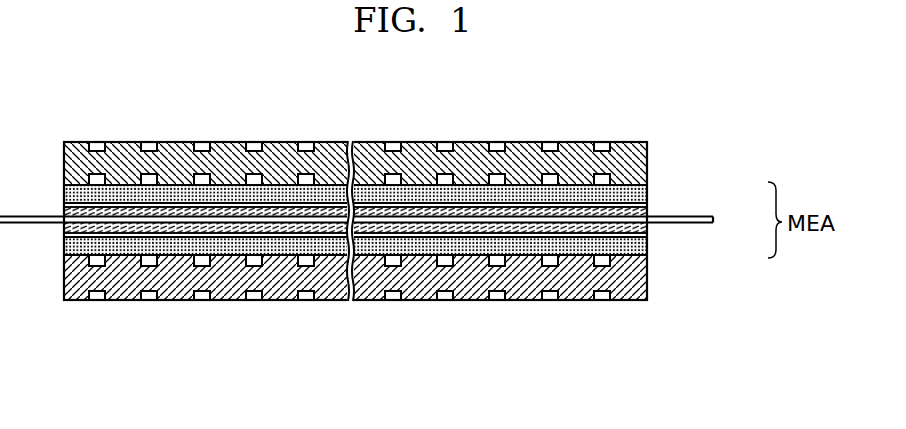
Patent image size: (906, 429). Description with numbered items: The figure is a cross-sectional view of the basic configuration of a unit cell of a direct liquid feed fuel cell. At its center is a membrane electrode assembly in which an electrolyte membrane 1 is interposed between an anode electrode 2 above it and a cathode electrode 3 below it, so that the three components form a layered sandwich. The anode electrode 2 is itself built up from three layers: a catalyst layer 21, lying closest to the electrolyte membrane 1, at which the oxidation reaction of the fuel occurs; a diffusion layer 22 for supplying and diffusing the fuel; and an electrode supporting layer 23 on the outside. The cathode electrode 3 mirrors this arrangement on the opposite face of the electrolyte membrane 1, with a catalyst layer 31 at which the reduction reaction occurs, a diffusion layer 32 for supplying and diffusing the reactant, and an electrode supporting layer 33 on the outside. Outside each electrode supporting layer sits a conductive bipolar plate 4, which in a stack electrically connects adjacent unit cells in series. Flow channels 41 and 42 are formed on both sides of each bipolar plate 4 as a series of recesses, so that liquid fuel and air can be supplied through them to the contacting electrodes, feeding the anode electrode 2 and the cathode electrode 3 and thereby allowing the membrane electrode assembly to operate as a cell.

The electrolyte membrane 1 is at (714, 222).
The anode electrode 2 is at (402, 186).
The cathode electrode 3 is at (402, 258).
The bipolar plate 4 is at (383, 219).
The catalyst layer 21 is at (386, 208).
The diffusion layer 22 is at (648, 201).
The electrode supporting layer 23 is at (648, 186).
The catalyst layer 31 is at (648, 230).
The diffusion layer 32 is at (648, 243).
The electrode supporting layer 33 is at (712, 232).
The flow channel 41 is at (149, 180).
The flow channel 42 is at (98, 147).